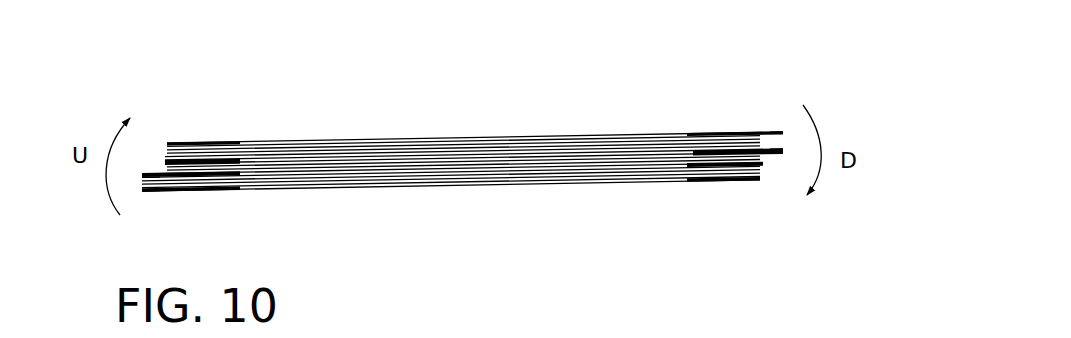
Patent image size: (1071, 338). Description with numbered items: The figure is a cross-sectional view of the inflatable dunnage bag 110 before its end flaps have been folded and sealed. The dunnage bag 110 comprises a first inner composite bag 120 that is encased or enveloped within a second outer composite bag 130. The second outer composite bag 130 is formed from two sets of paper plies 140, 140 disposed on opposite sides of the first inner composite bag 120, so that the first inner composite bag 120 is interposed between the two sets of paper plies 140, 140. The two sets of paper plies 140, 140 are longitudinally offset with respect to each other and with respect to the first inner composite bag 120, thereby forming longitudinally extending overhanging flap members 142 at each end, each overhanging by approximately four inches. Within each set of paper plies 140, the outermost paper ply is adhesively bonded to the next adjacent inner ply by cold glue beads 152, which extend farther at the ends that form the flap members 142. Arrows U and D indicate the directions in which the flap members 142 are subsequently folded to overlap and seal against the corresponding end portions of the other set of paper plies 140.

The inflatable dunnage bag 110 is at (417, 117).
The first inner composite bag 120 is at (510, 162).
The second outer composite bag 130 is at (495, 277).
The set of paper plies 140 is at (762, 105).
The flap member 142 is at (138, 180).
The cold glue beads 152 is at (208, 142).